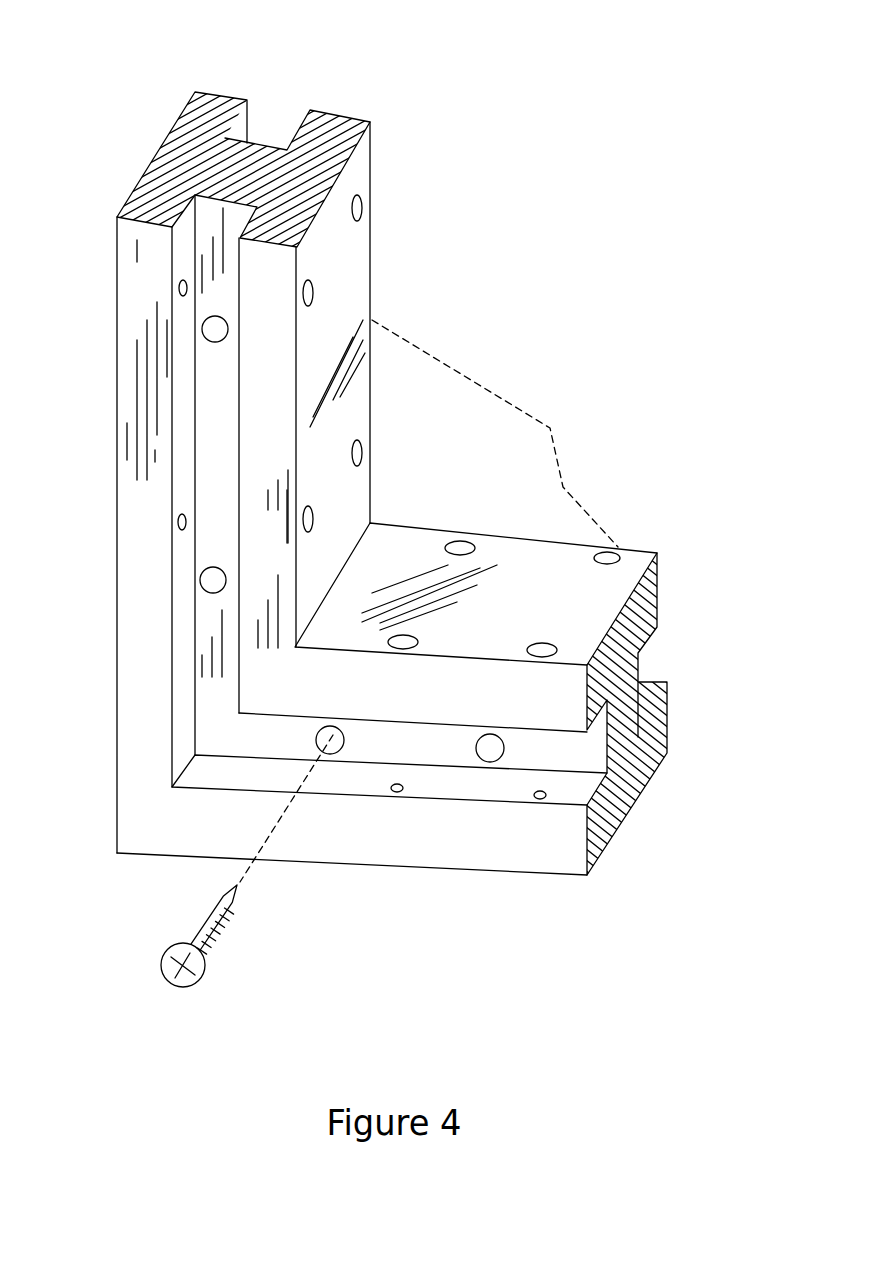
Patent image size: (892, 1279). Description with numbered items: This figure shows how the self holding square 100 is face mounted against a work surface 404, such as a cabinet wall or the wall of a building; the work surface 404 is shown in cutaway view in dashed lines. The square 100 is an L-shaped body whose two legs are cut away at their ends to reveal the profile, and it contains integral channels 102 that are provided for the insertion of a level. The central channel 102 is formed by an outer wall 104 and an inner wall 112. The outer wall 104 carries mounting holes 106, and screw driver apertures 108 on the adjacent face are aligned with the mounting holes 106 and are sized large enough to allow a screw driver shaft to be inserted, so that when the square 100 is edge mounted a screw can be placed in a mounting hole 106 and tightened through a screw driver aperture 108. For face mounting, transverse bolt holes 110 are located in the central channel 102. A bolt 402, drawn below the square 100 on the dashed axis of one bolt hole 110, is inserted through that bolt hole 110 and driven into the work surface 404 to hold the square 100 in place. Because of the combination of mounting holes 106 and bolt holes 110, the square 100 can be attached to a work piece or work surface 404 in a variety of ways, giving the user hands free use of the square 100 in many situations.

The self holding square 100 is at (542, 314).
The integral channel 102 is at (277, 128).
The outer wall 104 is at (123, 358).
The mounting hole 106 is at (178, 288).
The screw driver aperture 108 is at (313, 519).
The transverse bolt hole 110 is at (215, 326).
The inner wall 112 is at (258, 453).
The bolt 402 is at (202, 968).
The work surface 404 is at (522, 502).